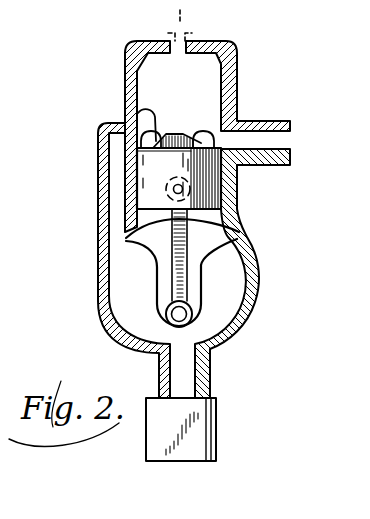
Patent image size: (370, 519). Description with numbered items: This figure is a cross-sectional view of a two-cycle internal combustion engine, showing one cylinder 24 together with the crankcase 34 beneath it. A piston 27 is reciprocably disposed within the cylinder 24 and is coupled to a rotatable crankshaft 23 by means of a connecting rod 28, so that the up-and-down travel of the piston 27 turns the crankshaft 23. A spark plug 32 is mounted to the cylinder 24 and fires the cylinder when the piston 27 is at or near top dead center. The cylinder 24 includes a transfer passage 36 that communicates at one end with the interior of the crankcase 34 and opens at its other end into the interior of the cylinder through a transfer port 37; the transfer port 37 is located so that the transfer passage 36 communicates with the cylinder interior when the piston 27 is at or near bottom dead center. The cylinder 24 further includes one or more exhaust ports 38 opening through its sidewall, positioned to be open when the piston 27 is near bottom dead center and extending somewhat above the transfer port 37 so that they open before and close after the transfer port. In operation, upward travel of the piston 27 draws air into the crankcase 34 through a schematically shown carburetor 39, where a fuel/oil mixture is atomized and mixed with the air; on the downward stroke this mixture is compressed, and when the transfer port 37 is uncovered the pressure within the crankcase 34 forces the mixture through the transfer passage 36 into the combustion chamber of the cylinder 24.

The crankshaft 23 is at (203, 243).
The cylinder 24 is at (122, 71).
The piston 27 is at (234, 172).
The connecting rod 28 is at (176, 273).
The spark plug 32 is at (190, 21).
The crankcase 34 is at (104, 314).
The transfer passage 36 is at (110, 177).
The transfer port 37 is at (135, 112).
The exhaust port 38 is at (200, 127).
The carburetor 39 is at (212, 396).